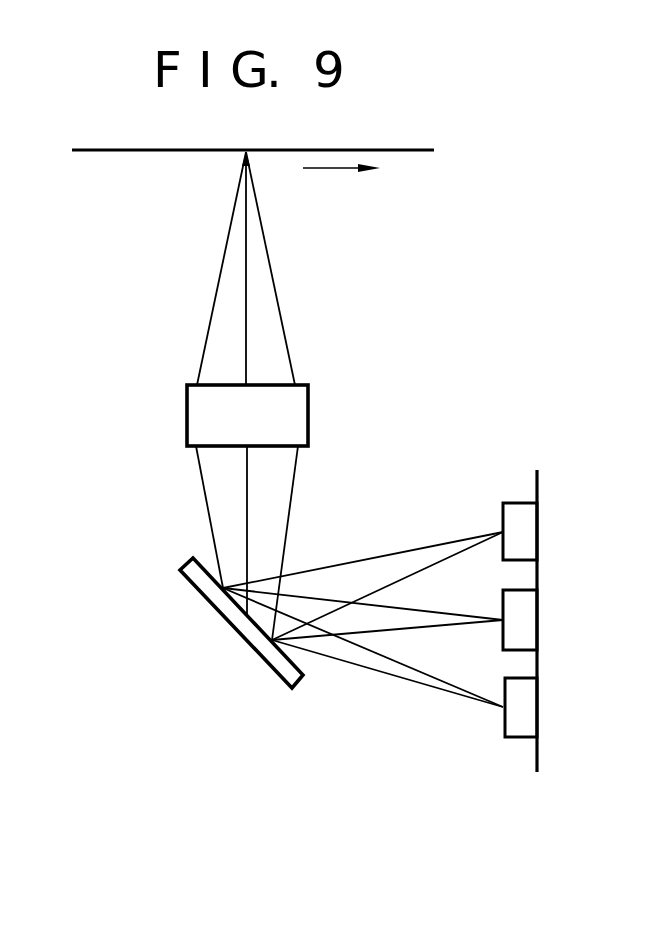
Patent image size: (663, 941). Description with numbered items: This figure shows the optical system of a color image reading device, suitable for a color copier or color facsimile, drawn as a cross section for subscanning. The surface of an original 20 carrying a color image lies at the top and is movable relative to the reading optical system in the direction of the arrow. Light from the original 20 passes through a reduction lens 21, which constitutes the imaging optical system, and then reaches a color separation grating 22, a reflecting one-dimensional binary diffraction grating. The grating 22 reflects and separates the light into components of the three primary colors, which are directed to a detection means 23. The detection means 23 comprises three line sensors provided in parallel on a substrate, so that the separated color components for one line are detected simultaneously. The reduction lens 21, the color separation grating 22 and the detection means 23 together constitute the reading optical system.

The original 20 is at (137, 153).
The reduction lens 21 is at (196, 415).
The color separation grating 22 is at (199, 590).
The detection means 23 is at (520, 746).